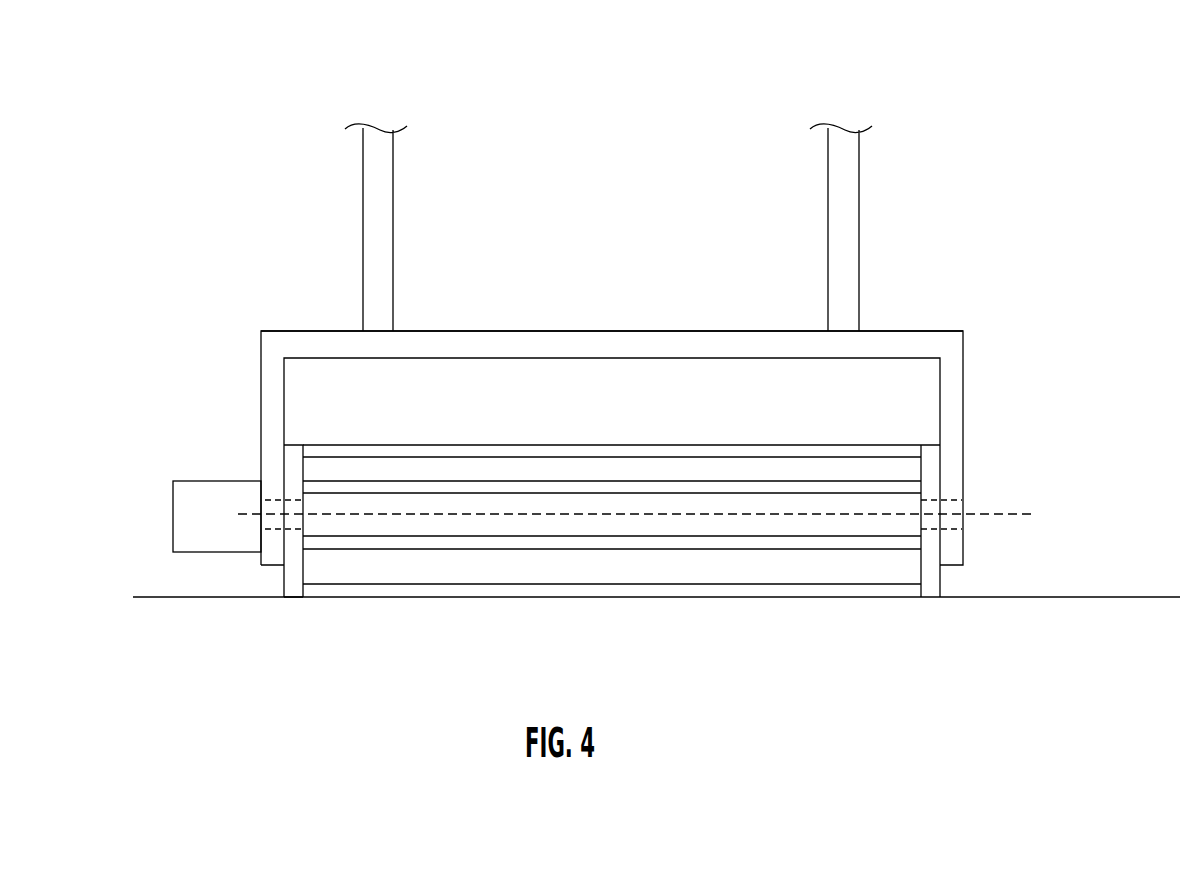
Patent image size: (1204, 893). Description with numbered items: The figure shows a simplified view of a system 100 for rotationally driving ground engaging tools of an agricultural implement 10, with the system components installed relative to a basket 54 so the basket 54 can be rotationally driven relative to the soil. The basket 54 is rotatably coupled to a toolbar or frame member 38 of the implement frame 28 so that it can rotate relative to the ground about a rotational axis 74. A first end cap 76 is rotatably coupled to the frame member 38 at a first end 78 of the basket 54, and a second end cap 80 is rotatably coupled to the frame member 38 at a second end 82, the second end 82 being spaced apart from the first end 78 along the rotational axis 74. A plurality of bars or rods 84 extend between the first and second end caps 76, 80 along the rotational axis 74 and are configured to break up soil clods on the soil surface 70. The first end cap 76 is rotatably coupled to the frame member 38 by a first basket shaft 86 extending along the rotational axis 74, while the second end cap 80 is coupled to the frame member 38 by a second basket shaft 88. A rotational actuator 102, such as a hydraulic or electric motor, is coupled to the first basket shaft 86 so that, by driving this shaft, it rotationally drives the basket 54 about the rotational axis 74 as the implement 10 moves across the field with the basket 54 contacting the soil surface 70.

The agricultural implement 10 is at (994, 132).
The system for rotationally driving ground engaging tools 100 is at (164, 137).
The implement frame 28 is at (626, 311).
The frame member 38 is at (512, 340).
The basket 54 is at (632, 611).
The soil surface 70 is at (1085, 597).
The rotational axis 74 is at (993, 513).
The first end cap 76 is at (293, 597).
The first end 78 is at (233, 578).
The second end cap 80 is at (930, 588).
The second end 82 is at (963, 574).
The bars or rods 84 is at (503, 457).
The first basket shaft 86 is at (272, 498).
The second basket shaft 88 is at (948, 498).
The rotational actuator 102 is at (173, 517).